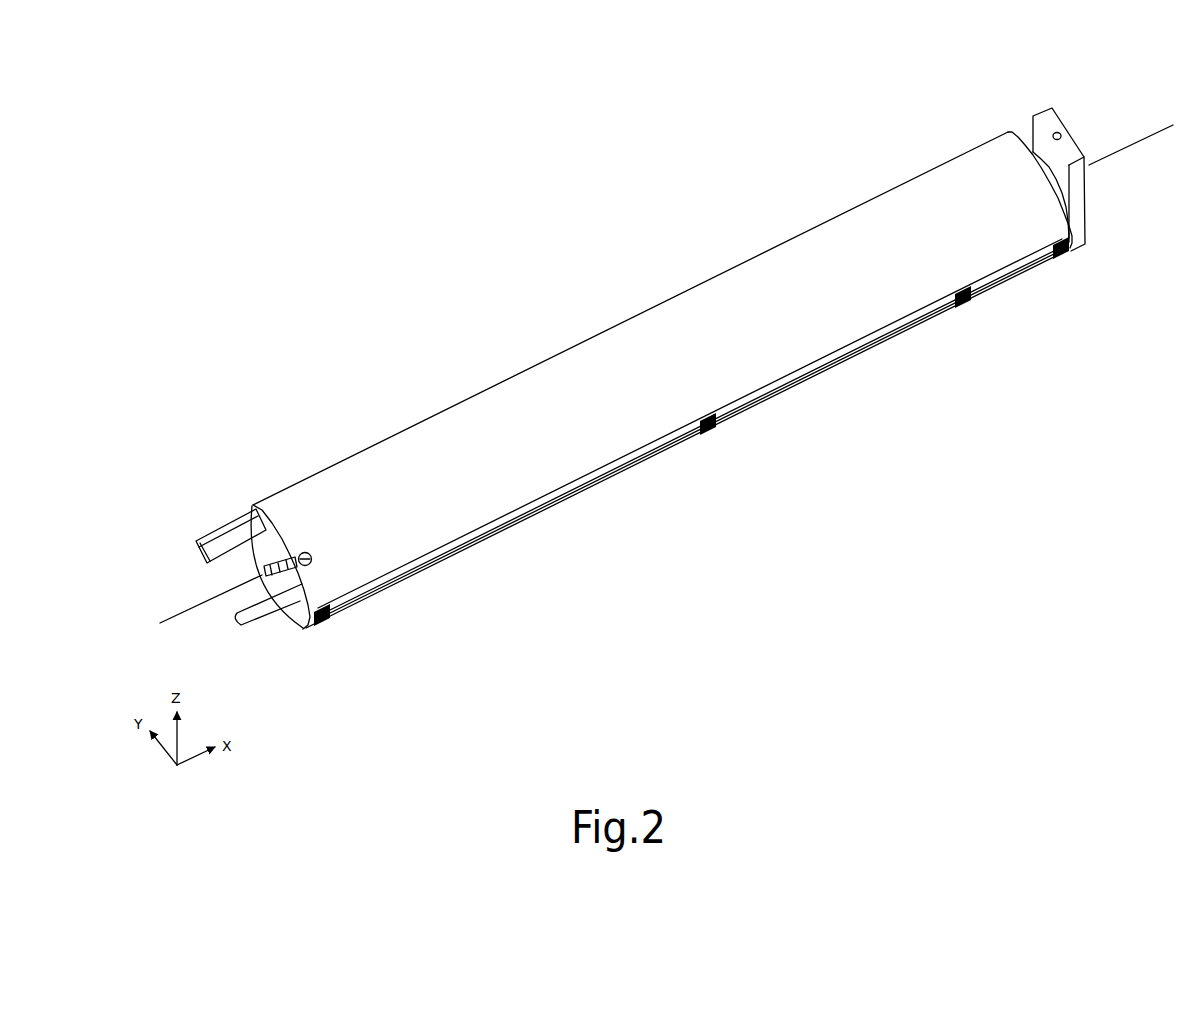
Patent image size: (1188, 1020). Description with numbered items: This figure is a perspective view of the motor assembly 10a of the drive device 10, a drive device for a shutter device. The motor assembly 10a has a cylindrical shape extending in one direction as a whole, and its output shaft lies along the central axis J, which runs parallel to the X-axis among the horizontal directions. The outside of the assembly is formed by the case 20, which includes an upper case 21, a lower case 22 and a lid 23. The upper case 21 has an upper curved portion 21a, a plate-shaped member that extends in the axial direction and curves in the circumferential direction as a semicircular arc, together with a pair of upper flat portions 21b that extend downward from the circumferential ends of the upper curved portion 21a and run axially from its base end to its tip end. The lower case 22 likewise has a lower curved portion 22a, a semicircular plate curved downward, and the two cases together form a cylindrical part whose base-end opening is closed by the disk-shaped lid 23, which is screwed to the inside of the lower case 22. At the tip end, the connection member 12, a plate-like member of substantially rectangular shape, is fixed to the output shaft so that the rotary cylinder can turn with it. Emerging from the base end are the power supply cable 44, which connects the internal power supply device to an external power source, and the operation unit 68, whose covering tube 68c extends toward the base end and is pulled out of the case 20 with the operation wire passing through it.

The drive device 10 is at (1108, 95).
The motor assembly 10a is at (643, 277).
The connection member 12 is at (1056, 122).
The central axis J is at (1136, 142).
The case 20 is at (693, 283).
The upper case 21 is at (662, 390).
The upper curved portion 21a is at (369, 465).
The upper flat portions 21b is at (447, 553).
The lower case 22 is at (329, 598).
The lower curved portion 22a is at (289, 628).
The lid 23 is at (262, 556).
The power supply cable 44 is at (230, 535).
The operation unit 68 is at (265, 624).
The covering tube 68c is at (255, 621).